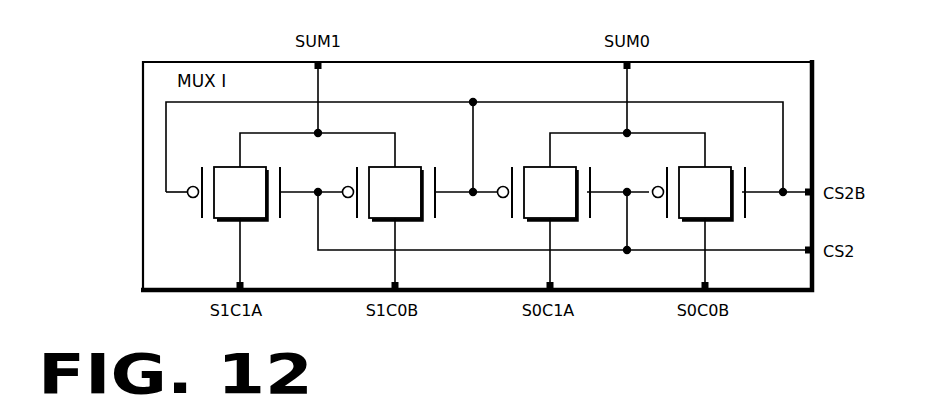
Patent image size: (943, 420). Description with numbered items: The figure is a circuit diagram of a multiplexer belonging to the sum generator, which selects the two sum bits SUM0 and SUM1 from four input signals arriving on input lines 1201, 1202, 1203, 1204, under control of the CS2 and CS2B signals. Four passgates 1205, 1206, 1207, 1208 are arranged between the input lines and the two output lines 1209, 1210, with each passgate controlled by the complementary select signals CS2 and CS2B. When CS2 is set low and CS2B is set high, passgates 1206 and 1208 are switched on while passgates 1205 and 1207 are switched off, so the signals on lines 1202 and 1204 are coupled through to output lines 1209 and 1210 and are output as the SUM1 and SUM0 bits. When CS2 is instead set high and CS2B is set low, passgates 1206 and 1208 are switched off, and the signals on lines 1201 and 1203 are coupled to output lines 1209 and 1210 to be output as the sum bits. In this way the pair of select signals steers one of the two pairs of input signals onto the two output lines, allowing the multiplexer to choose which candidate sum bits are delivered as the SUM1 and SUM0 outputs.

The input line 1201 is at (239, 265).
The input line 1202 is at (394, 265).
The input line 1203 is at (549, 265).
The input line 1204 is at (704, 265).
The passgate 1205 is at (234, 193).
The passgate 1206 is at (389, 193).
The passgate 1207 is at (544, 193).
The passgate 1208 is at (699, 193).
The output line 1209 is at (316, 80).
The output line 1210 is at (626, 80).